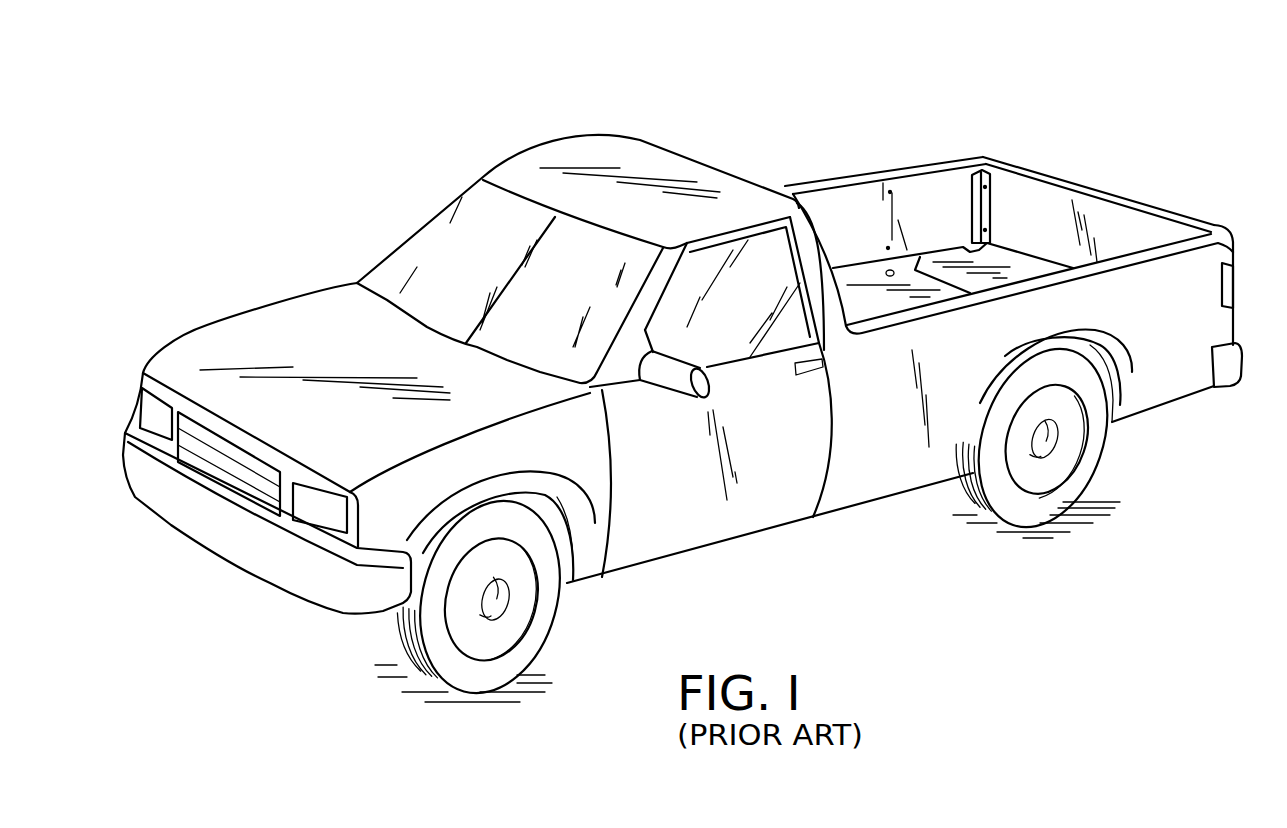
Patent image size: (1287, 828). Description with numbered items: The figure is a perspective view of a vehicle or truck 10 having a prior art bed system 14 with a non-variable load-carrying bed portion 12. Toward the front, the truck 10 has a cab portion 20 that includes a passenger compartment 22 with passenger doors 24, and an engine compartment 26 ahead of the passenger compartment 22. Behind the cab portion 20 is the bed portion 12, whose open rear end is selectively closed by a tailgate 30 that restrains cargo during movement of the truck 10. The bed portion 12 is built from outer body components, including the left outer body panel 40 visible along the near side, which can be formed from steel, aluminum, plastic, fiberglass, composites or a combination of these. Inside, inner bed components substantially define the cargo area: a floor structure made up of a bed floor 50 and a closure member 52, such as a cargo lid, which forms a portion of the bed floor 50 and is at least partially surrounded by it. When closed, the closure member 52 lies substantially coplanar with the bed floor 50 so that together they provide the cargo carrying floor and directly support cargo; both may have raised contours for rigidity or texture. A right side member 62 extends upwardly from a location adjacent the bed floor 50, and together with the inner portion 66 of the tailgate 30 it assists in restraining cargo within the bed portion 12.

The truck 10 is at (397, 127).
The bed portion 12 is at (918, 150).
The prior art bed system 14 is at (863, 206).
The cab portion 20 is at (490, 155).
The passenger compartment 22 is at (423, 213).
The passenger doors 24 is at (717, 520).
The engine compartment 26 is at (236, 309).
The tailgate 30 is at (1120, 195).
The left outer body panel 40 is at (1170, 363).
The bed floor 50 is at (880, 297).
The closure member 52 is at (967, 278).
The right side member 62 is at (838, 206).
The inner portion of the tailgate 66 is at (1043, 200).